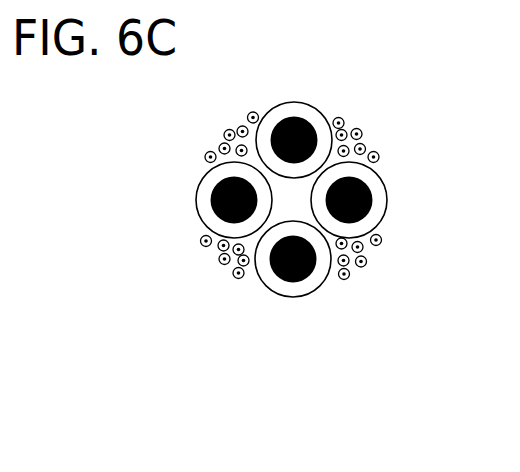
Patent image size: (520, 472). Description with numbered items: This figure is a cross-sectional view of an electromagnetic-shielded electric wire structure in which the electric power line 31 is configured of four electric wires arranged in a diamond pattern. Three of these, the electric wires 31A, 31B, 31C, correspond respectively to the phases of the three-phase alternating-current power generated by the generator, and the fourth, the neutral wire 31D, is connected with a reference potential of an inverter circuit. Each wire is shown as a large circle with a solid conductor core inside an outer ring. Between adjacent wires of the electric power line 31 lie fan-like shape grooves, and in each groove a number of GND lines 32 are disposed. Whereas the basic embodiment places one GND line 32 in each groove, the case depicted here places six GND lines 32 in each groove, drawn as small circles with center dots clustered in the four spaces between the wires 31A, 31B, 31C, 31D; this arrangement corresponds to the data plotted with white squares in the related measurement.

The electric power line 31 is at (291, 189).
The electric wire 31A is at (300, 104).
The electric wire 31B is at (387, 197).
The electric wire 31C is at (313, 293).
The neutral wire 31D is at (190, 198).
The GND line 32 is at (226, 131).